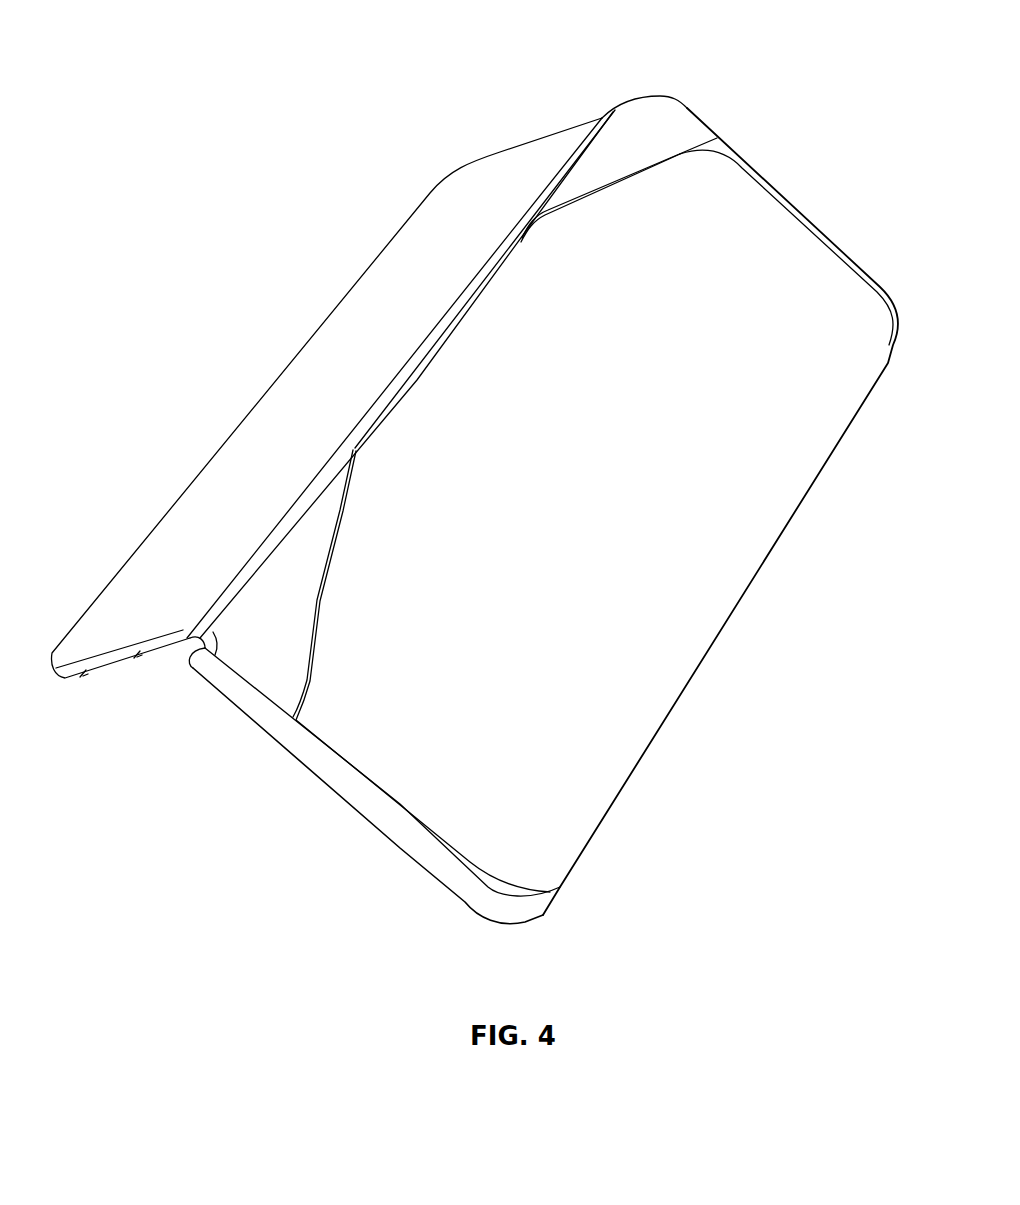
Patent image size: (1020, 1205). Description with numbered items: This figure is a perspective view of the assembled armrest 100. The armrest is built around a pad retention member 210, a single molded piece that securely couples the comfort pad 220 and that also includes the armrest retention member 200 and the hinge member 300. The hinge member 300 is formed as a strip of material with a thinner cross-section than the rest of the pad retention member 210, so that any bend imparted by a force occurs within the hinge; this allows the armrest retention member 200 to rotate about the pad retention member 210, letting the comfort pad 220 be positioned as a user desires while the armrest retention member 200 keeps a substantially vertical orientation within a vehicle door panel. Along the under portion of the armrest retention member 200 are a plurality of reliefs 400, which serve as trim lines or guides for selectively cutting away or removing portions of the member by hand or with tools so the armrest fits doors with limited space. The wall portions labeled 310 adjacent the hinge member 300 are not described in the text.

The container 100 is at (345, 94).
The lid 200 is at (324, 349).
The base side wall 210 is at (423, 850).
The base top surface 220 is at (616, 498).
The hinge rib 300 is at (605, 116).
The flap 310 is at (658, 117).
The tab 400 is at (83, 677).